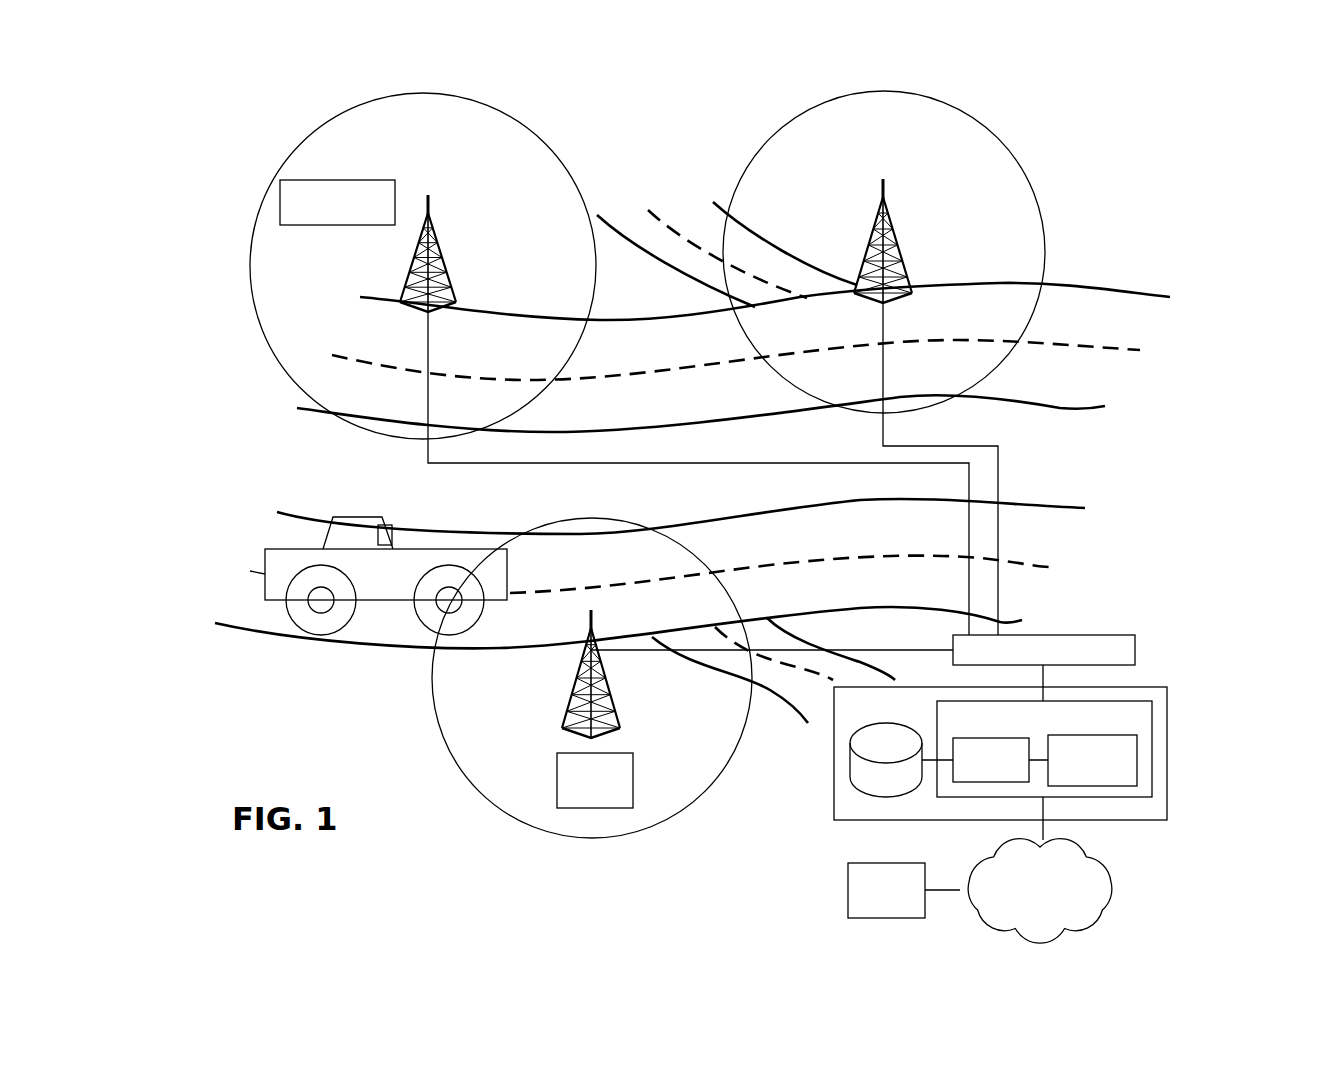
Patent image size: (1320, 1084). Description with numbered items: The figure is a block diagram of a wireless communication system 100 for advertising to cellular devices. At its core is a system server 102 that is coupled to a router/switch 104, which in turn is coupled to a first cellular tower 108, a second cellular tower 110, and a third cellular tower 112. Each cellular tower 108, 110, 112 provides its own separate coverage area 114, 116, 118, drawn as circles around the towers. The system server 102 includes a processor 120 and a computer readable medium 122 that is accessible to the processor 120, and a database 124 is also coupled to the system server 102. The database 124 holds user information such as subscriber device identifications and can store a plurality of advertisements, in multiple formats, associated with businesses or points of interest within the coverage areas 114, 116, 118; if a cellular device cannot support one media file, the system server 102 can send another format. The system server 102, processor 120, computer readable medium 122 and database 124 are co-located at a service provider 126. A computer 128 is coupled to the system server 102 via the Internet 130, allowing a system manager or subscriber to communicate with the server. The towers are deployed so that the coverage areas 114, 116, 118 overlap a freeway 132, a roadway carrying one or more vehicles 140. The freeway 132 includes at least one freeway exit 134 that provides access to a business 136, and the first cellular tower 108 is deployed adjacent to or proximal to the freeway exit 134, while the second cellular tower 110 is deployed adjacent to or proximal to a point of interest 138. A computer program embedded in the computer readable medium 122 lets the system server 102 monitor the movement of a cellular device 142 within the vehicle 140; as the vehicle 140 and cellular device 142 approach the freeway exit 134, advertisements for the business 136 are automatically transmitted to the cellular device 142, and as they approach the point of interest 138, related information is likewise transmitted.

The system 100 is at (1087, 254).
The system server 102 is at (1092, 820).
The router/switch 104 is at (1117, 650).
The first cellular tower 108 is at (572, 685).
The second cellular tower 110 is at (413, 260).
The third cellular tower 112 is at (868, 245).
The coverage area 114 is at (487, 798).
The coverage area 116 is at (315, 130).
The coverage area 118 is at (768, 137).
The processor 120 is at (990, 782).
The computer readable medium 122 is at (1138, 762).
The database 124 is at (848, 778).
The service provider 126 is at (1107, 798).
The computer 128 is at (848, 893).
The Internet 130 is at (1122, 892).
The freeway 132 is at (385, 637).
The freeway exit 134 is at (777, 680).
The business 136 is at (592, 807).
The point of interest 138 is at (280, 205).
The vehicle 140 is at (302, 557).
The cellular device 142 is at (392, 538).